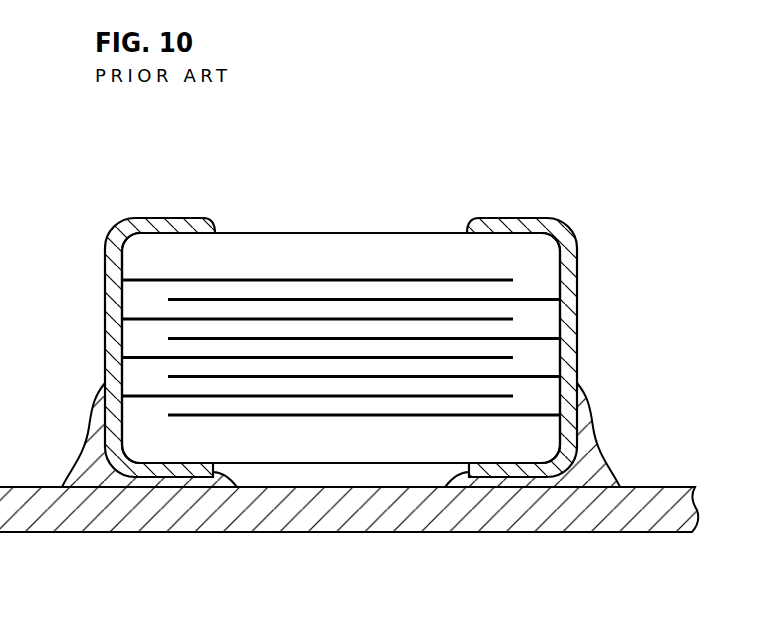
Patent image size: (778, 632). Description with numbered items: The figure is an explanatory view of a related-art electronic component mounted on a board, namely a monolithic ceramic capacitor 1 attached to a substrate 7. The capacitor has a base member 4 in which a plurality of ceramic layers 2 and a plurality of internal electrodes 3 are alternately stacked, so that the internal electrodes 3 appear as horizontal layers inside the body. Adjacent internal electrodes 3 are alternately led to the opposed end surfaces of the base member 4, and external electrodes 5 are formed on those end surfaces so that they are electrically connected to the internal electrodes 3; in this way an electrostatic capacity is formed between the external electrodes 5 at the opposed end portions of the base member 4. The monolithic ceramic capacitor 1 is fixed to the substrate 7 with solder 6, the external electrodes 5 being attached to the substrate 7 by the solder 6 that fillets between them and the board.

The monolithic ceramic capacitor 1 is at (340, 361).
The ceramic layers 2 is at (283, 330).
The internal electrodes 3 is at (403, 337).
The base member 4 is at (308, 233).
The external electrodes 5 is at (125, 221).
The solder 6 is at (92, 455).
The substrate 7 is at (627, 532).